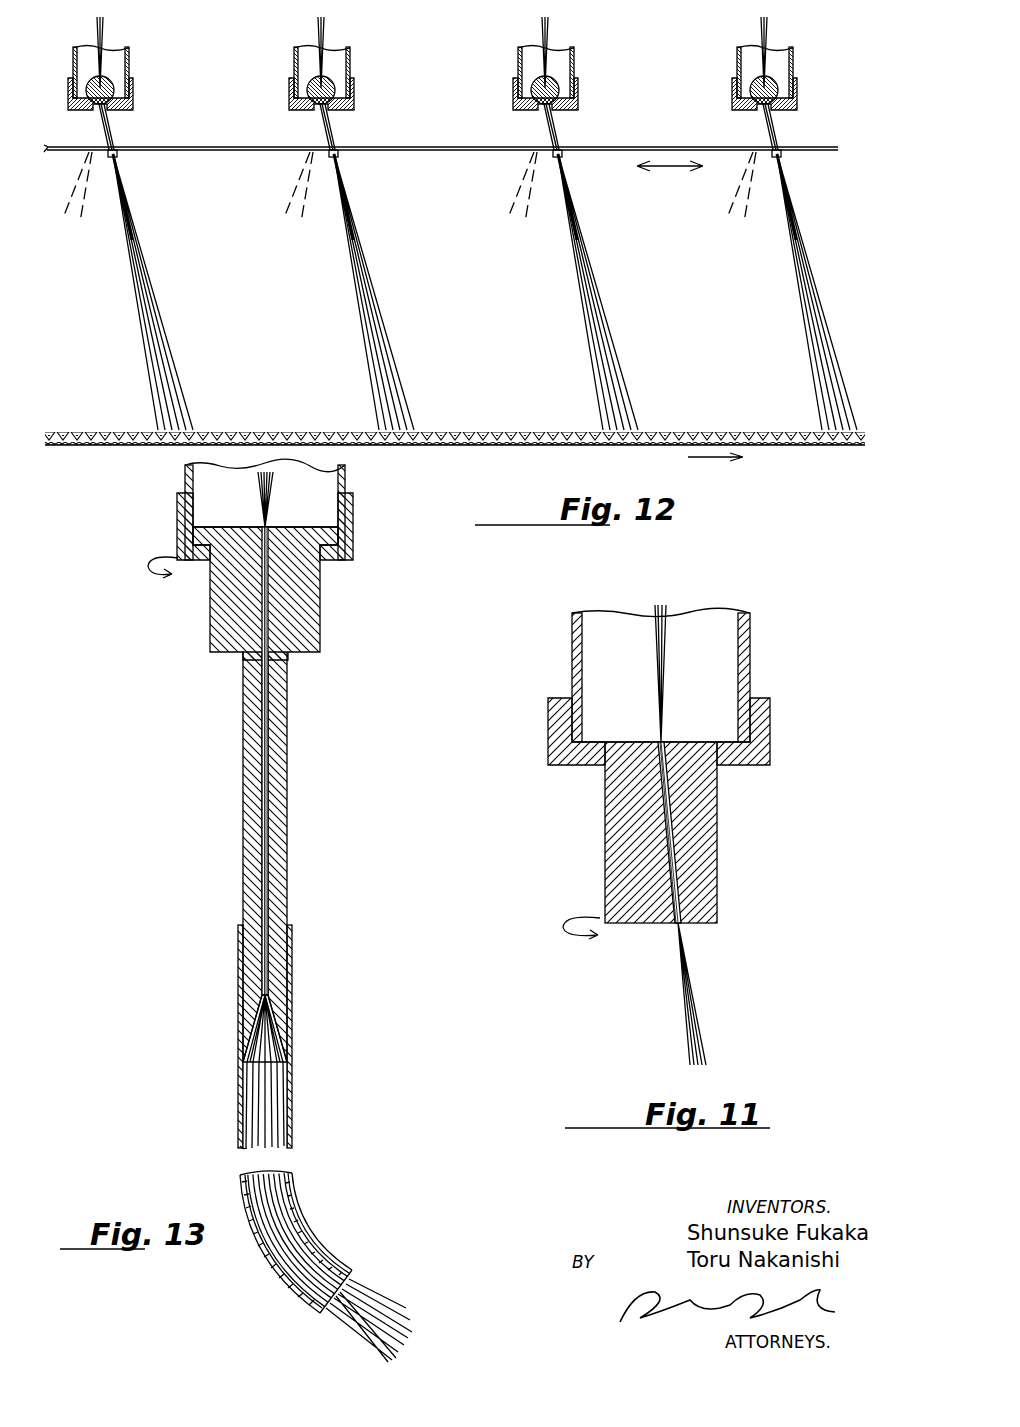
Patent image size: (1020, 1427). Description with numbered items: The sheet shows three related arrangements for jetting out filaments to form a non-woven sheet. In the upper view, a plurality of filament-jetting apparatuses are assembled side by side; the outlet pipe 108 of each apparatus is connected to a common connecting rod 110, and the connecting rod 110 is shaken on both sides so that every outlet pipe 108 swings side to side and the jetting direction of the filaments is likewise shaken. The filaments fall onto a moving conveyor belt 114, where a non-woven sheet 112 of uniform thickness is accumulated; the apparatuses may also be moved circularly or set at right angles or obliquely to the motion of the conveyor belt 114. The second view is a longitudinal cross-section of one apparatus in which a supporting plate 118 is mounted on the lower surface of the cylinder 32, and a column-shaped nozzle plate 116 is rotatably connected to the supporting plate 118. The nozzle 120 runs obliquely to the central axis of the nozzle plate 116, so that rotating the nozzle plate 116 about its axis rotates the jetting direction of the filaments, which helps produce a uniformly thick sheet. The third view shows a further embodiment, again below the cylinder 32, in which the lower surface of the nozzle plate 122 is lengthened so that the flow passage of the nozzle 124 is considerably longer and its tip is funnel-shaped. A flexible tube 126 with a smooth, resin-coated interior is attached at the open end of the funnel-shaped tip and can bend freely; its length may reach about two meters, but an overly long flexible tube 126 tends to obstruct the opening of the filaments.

In FIG. 13, the cylinder 32 is at (345, 487).
In FIG. 11, the cylinder 32 is at (750, 648).
In FIG. 12, the outlet pipe 108 is at (338, 137).
In FIG. 12, the connecting rod 110 is at (205, 147).
In FIG. 12, the non-woven sheet 112 is at (432, 431).
In FIG. 12, the conveyor belt 114 is at (490, 446).
In FIG. 11, the nozzle plate 116 is at (695, 832).
In FIG. 11, the supporting plate 118 is at (557, 718).
In FIG. 11, the nozzle 120 is at (680, 900).
In FIG. 13, the nozzle plate 122 is at (250, 800).
In FIG. 13, the nozzle 124 is at (270, 726).
In FIG. 13, the flexible tube 126 is at (292, 1082).